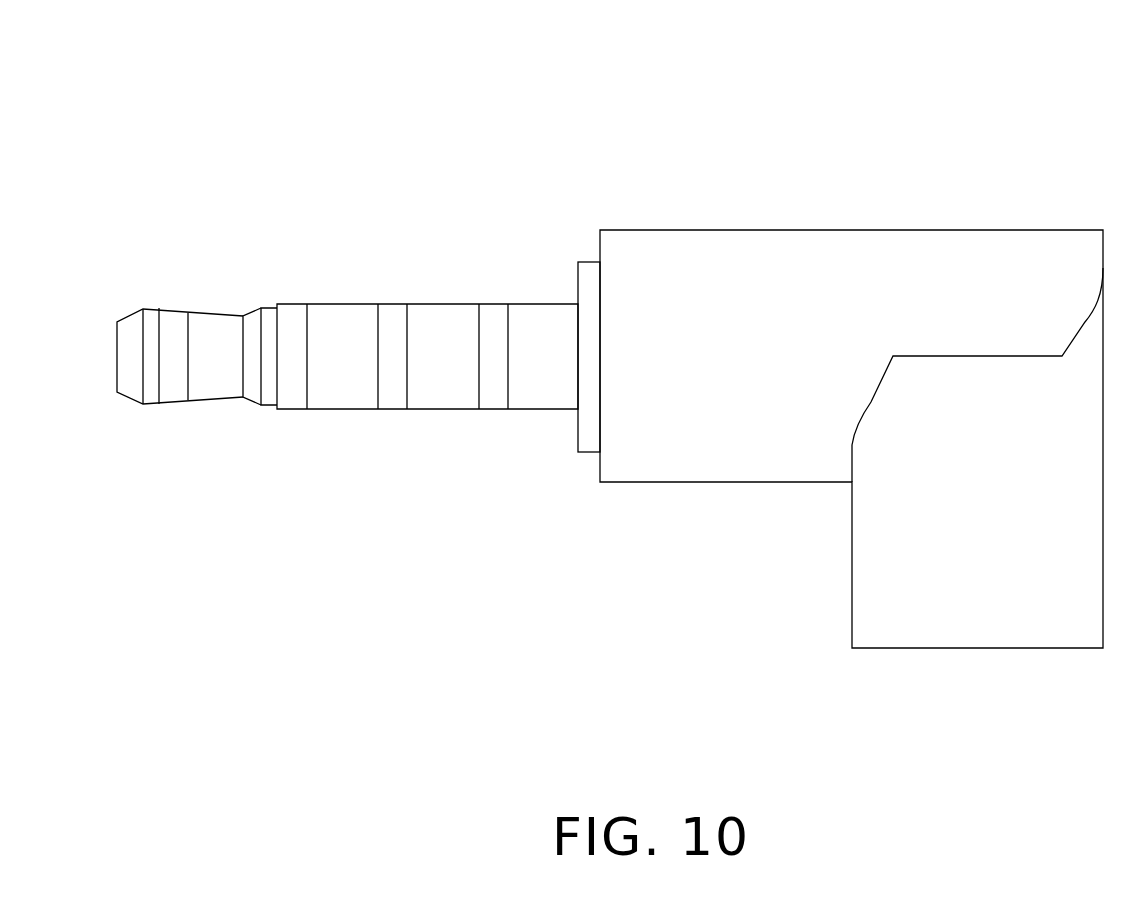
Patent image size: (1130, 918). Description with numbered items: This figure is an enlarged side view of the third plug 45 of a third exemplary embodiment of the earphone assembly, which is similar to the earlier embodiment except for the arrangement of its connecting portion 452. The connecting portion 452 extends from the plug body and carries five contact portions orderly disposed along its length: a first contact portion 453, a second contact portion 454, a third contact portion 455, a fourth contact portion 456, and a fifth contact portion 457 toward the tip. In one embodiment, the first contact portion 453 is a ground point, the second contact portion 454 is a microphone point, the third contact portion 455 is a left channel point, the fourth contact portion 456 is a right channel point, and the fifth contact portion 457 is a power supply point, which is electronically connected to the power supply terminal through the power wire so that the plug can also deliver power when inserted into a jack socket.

The third plug 45 is at (566, 336).
The connecting portion 452 is at (304, 332).
The first contact portion 453 is at (547, 383).
The second contact portion 454 is at (453, 385).
The third contact portion 455 is at (348, 385).
The fourth contact portion 456 is at (212, 377).
The fifth contact portion 457 is at (157, 325).